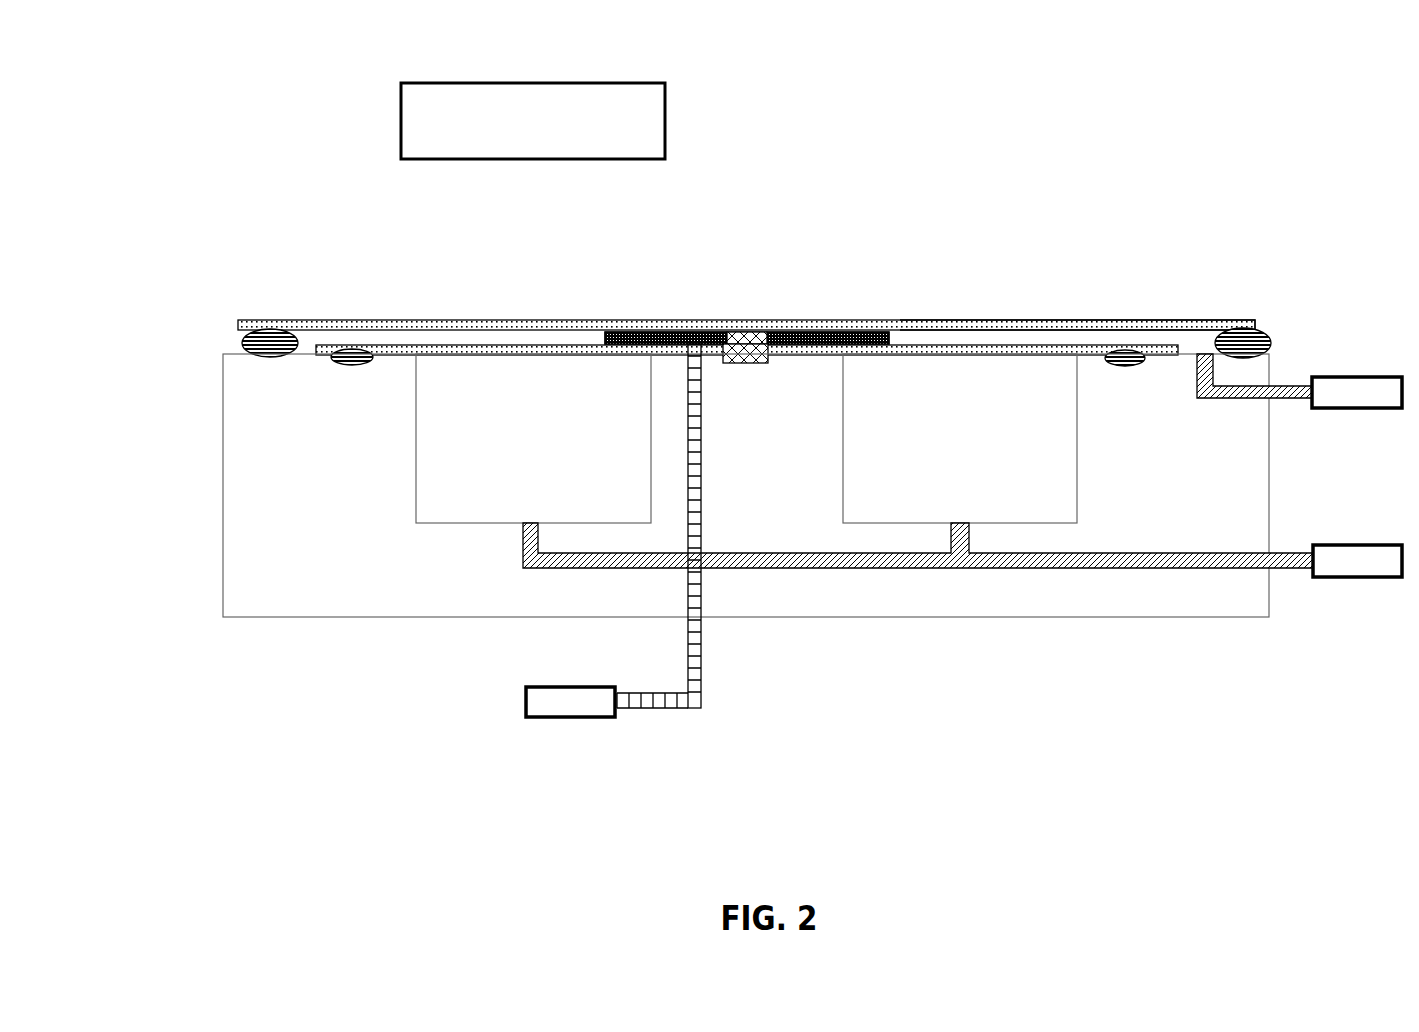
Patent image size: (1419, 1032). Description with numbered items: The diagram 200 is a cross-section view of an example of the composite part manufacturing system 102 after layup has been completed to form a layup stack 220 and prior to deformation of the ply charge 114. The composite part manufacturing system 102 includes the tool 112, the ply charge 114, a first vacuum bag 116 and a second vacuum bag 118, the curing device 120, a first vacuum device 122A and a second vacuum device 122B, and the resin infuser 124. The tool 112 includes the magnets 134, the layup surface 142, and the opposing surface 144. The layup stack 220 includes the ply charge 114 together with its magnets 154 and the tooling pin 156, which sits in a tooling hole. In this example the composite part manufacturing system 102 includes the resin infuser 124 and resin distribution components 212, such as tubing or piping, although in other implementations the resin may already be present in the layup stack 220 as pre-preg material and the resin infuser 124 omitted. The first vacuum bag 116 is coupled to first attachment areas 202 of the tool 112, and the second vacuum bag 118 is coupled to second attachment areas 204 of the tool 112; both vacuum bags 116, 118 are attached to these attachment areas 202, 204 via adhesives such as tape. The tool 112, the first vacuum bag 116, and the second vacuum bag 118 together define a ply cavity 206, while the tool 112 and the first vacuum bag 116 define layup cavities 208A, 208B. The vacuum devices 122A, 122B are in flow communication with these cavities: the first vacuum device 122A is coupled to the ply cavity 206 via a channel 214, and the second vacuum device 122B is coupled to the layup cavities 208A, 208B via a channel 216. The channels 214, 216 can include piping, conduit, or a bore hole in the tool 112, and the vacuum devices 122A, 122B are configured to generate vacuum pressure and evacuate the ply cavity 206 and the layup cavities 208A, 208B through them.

The diagram 200 is at (128, 88).
The curing device 120 is at (533, 121).
The composite part manufacturing system 102 is at (892, 145).
The layup stack 220 is at (214, 357).
The second vacuum bag 118 is at (428, 328).
The ply cavity 206 is at (953, 337).
The first vacuum bag 116 is at (327, 347).
The second attachment areas 204 is at (1262, 345).
The first attachment areas 202 is at (352, 367).
The magnets 154 is at (726, 342).
The ply charge 114 is at (635, 338).
The layup surface 142 is at (830, 353).
The tooling pin 156 is at (743, 335).
The magnets 134 is at (732, 357).
The tool 112 is at (746, 485).
The layup cavity 208A is at (533, 438).
The layup cavity 208B is at (960, 438).
The channel 214 is at (1290, 398).
The first vacuum device 122A is at (1357, 393).
The channel 216 is at (1290, 568).
The second vacuum device 122B is at (1357, 561).
The opposing surface 144 is at (787, 617).
The resin distribution components 212 is at (682, 702).
The resin infuser 124 is at (570, 702).